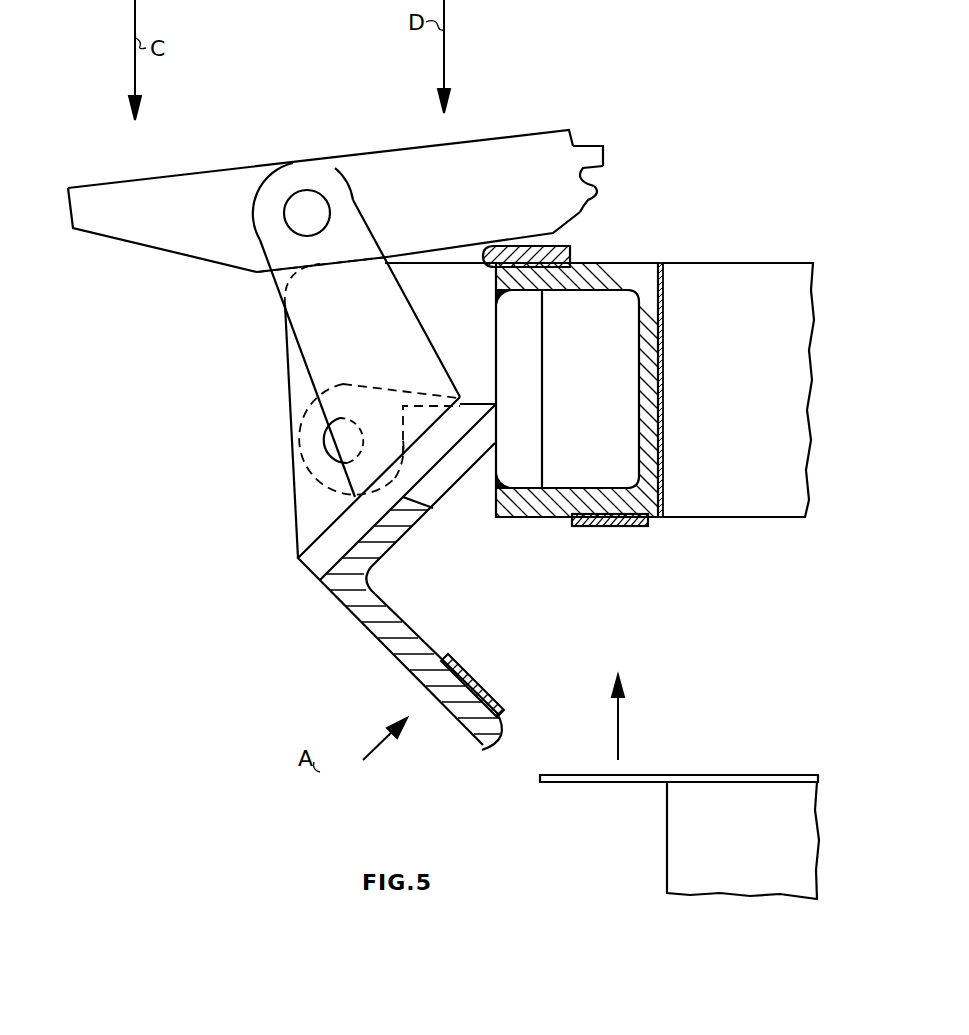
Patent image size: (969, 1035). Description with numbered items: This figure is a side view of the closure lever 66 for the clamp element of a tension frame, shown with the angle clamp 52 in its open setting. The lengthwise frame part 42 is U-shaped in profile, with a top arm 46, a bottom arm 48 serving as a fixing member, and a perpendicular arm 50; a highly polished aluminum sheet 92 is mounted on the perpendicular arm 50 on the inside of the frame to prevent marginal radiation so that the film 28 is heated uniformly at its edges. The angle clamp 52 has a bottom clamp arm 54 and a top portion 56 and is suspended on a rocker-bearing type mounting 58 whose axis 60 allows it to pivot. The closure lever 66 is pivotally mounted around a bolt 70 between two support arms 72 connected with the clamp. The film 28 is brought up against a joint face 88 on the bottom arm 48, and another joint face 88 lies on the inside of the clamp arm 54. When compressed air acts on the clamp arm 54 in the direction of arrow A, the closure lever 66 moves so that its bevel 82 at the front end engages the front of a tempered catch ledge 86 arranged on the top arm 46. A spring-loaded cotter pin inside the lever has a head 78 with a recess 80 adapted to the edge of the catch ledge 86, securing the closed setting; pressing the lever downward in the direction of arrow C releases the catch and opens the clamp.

The film 28 is at (645, 775).
The lengthwise frame part 42 is at (626, 367).
The top arm 46 is at (608, 291).
The bottom arm 48 is at (563, 495).
The perpendicular arm 50 is at (650, 434).
The angle clamp 52 is at (336, 614).
The clamp arm 54 is at (400, 650).
The top portion 56 is at (412, 530).
The mounting 58 is at (452, 266).
The axis 60 is at (322, 441).
The closure lever 66 is at (503, 135).
The bolt 70 is at (296, 191).
The support arm 72 is at (282, 298).
The head 78 is at (597, 144).
The recess 80 is at (580, 182).
The bevel 82 is at (588, 196).
The catch ledge 86 is at (572, 258).
The joint face 88 is at (612, 527).
The aluminum sheet 92 is at (663, 370).